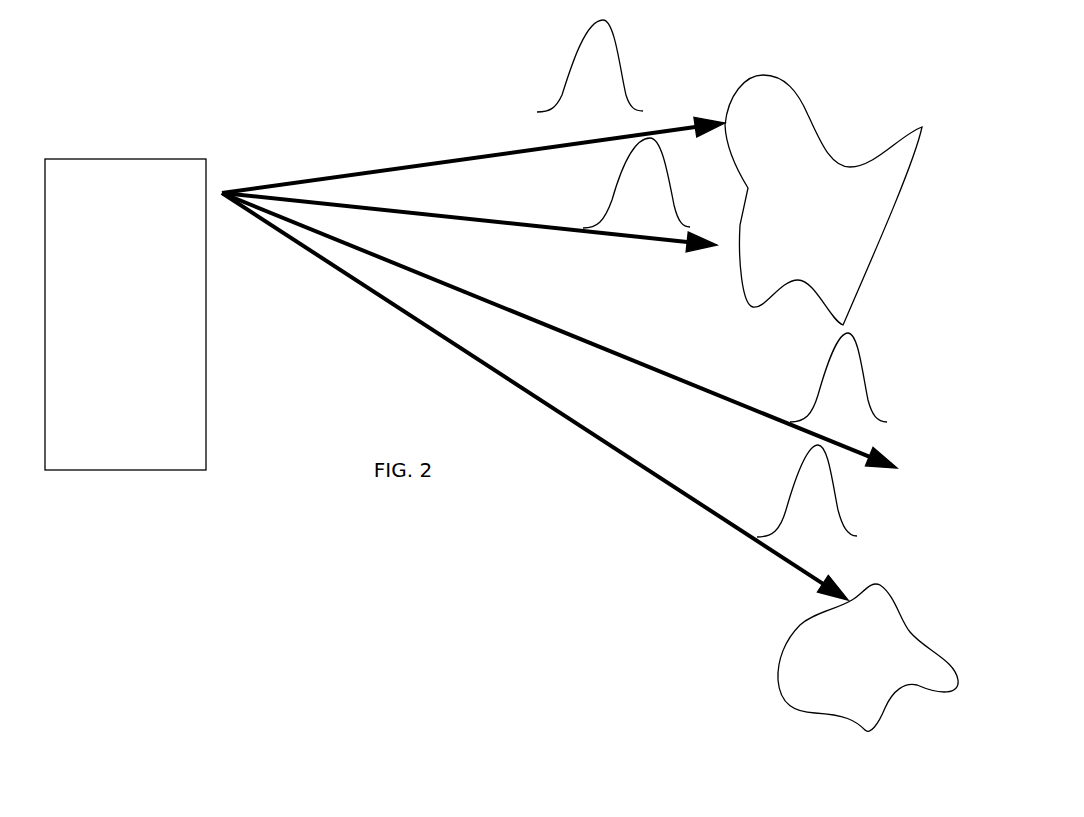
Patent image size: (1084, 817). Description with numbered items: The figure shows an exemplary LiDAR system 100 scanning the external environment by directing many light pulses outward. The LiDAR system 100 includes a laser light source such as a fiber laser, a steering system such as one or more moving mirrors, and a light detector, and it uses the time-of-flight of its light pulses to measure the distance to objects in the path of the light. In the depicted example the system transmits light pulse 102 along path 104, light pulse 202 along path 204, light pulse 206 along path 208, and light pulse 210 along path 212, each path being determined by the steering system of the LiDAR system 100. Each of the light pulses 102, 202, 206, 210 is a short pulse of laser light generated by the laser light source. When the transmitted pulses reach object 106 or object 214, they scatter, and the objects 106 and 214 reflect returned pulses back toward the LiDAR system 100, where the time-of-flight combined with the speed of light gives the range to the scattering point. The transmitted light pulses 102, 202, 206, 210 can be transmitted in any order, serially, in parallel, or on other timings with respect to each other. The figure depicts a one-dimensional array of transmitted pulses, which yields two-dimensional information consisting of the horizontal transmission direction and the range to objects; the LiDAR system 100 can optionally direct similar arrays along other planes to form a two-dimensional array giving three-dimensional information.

The LiDAR system 100 is at (125, 314).
The light pulse 102 is at (588, 64).
The path 104 is at (470, 155).
The object 106 is at (823, 200).
The light pulse 202 is at (625, 183).
The path 204 is at (548, 225).
The light pulse 206 is at (822, 377).
The path 208 is at (540, 320).
The light pulse 210 is at (791, 491).
The path 212 is at (637, 458).
The object 214 is at (868, 657).